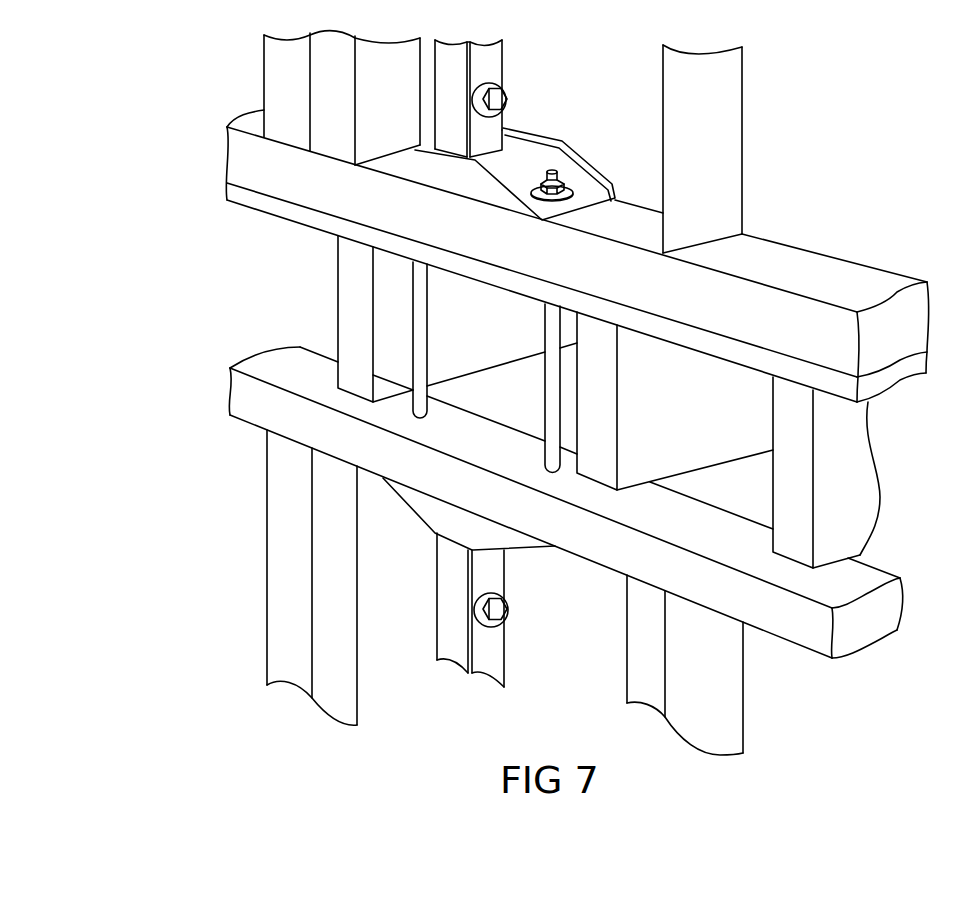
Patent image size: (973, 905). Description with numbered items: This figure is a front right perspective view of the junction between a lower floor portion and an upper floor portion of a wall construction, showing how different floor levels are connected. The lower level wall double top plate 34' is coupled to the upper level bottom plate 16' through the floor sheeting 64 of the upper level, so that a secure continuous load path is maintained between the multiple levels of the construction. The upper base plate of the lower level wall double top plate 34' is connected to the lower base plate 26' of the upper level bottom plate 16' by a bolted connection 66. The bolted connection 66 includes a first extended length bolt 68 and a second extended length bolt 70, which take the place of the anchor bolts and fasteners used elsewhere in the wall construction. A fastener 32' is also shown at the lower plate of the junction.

The upper level bottom plate 16' is at (540, 256).
The floor sheeting 64 is at (232, 195).
The lower base plate 26' is at (453, 154).
The bolted connection 66 is at (374, 355).
The first extended length bolt 68 is at (417, 310).
The second extended length bolt 70 is at (550, 392).
The lower level wall double top plate 34' is at (526, 502).
The fastener 32' is at (474, 582).